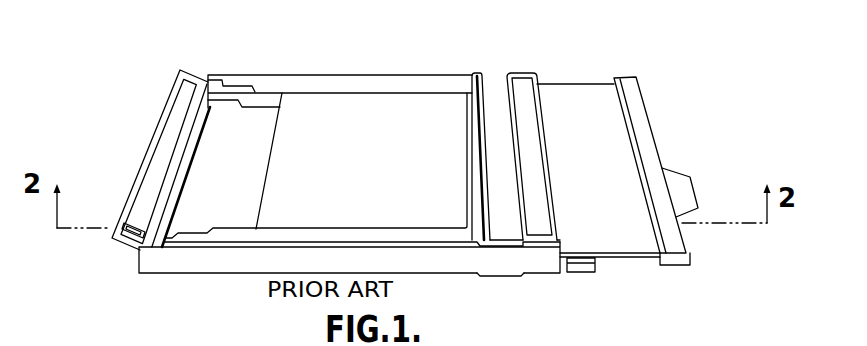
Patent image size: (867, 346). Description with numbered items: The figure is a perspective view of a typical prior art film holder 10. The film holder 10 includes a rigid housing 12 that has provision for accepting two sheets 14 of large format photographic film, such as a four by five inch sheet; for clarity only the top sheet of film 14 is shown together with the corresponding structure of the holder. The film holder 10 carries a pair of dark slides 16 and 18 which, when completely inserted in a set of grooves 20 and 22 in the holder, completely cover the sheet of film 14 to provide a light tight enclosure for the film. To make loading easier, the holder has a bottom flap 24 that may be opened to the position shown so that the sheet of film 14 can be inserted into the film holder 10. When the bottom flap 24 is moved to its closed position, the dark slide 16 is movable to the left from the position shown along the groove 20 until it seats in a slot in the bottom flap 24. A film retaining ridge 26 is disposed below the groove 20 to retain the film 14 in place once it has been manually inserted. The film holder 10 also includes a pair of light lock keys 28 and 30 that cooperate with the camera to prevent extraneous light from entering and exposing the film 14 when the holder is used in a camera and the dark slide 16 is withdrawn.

The film holder 10 is at (432, 58).
The rigid housing 12 is at (513, 275).
The sheet of film 14 is at (195, 192).
The dark slide 16 is at (633, 74).
The dark slide 18 is at (593, 274).
The groove 20 is at (276, 92).
The groove 22 is at (122, 224).
The bottom flap 24 is at (170, 135).
The film retaining ridge 26 is at (261, 87).
The light lock key 28 is at (477, 76).
The light lock key 30 is at (483, 276).